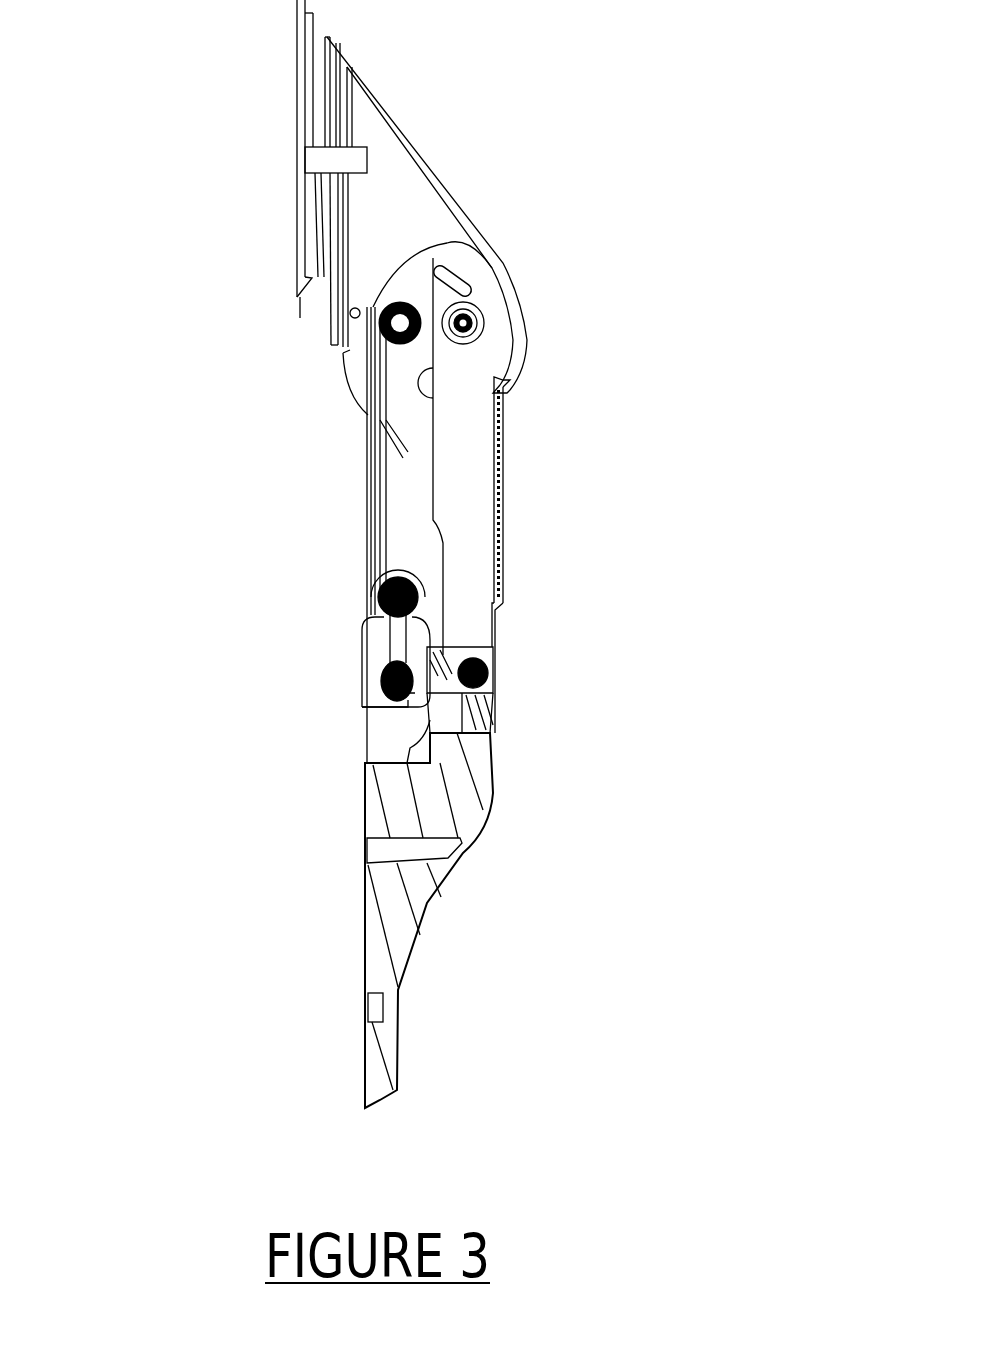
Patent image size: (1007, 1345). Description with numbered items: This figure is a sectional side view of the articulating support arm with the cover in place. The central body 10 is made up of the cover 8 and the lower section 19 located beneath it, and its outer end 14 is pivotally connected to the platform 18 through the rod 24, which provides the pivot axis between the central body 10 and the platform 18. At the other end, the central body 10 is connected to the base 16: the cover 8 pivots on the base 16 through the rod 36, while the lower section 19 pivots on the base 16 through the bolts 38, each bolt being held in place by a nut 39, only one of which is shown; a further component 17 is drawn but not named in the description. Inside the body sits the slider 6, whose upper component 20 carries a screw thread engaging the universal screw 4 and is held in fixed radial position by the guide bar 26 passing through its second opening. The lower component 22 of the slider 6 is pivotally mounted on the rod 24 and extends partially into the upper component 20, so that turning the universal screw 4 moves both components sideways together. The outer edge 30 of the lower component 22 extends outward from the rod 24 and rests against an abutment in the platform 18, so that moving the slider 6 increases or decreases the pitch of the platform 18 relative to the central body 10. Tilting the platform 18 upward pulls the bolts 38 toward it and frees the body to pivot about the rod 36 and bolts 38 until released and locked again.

The universal screw 4 is at (373, 587).
The slider 6 is at (427, 693).
The cover 8 is at (365, 503).
The central body 10 is at (508, 506).
The outer end 14 is at (407, 703).
The base 16 is at (405, 135).
The plate assembly 17 is at (297, 78).
The platform 18 is at (420, 907).
The lower section 19 is at (457, 468).
The upper component 20 is at (363, 638).
The lower component 22 is at (478, 667).
The rod 24 is at (480, 690).
The guide bar 26 is at (362, 675).
The outer edge 30 is at (487, 712).
The rod 36 is at (377, 311).
The bolt 38 is at (487, 303).
The nut 39 is at (517, 333).